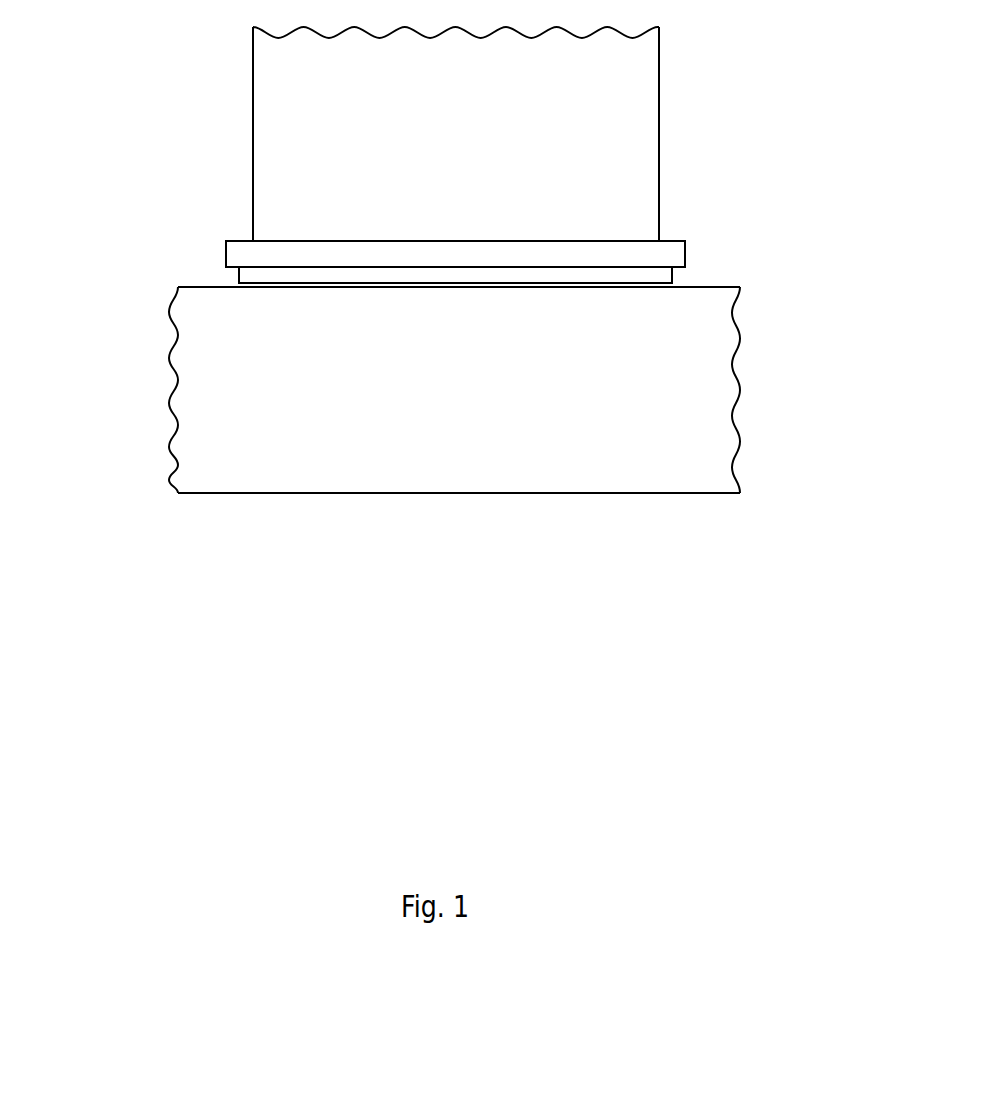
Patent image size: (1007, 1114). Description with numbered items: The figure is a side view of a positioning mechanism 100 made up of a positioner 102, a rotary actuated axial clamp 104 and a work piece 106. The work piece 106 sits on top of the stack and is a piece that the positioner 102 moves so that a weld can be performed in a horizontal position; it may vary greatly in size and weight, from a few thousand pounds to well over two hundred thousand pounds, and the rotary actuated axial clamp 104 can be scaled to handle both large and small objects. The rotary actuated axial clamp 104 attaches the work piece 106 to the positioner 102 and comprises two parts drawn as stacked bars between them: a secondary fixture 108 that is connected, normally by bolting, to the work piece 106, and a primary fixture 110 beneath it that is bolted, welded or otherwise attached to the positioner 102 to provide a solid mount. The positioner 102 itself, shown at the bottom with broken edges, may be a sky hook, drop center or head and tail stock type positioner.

The positioning mechanism 100 is at (358, 569).
The positioner 102 is at (498, 478).
The rotary actuated axial clamp 104 is at (205, 247).
The work piece 106 is at (635, 78).
The secondary fixture 108 is at (670, 250).
The primary fixture 110 is at (662, 278).